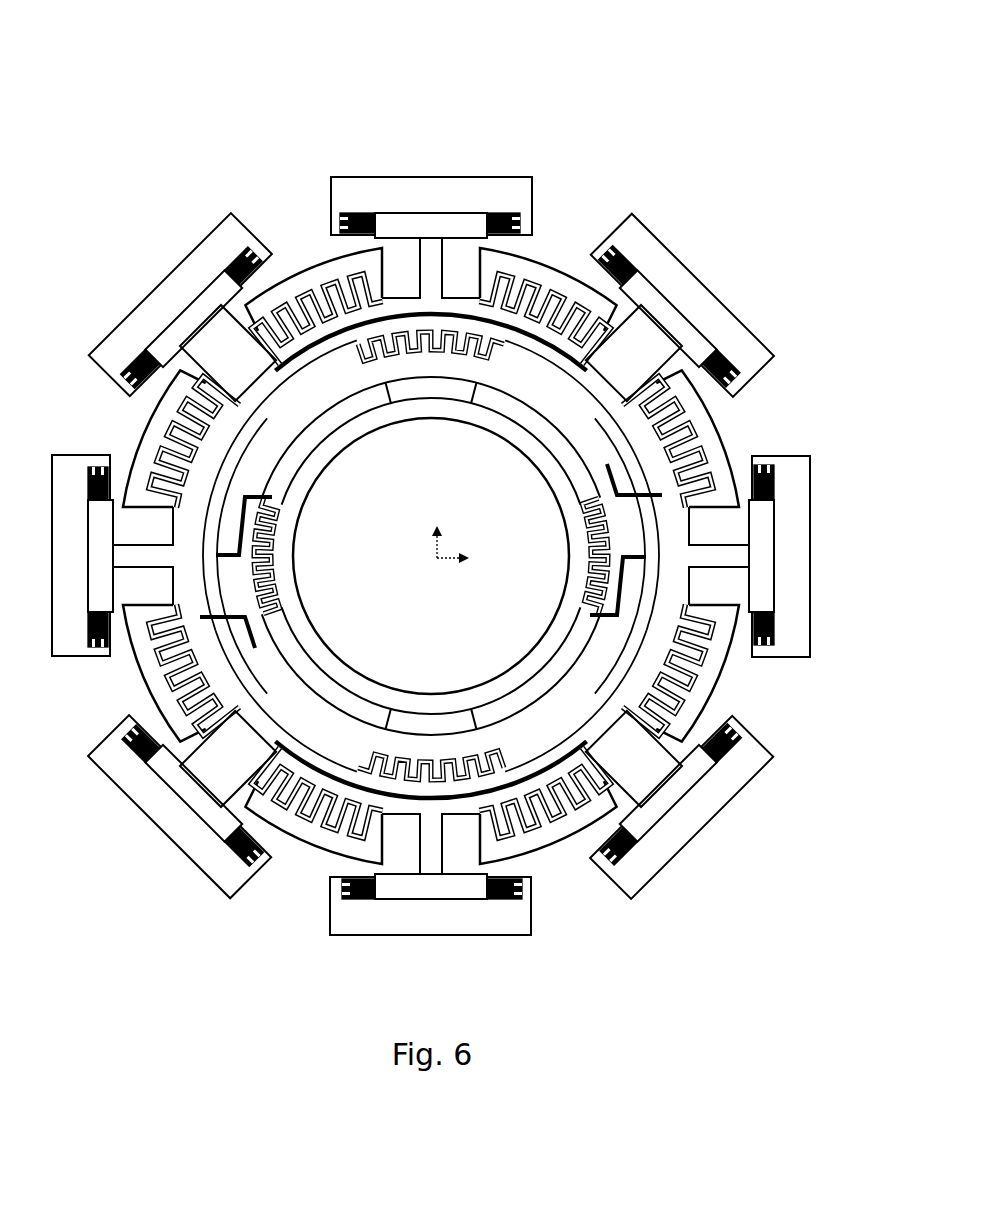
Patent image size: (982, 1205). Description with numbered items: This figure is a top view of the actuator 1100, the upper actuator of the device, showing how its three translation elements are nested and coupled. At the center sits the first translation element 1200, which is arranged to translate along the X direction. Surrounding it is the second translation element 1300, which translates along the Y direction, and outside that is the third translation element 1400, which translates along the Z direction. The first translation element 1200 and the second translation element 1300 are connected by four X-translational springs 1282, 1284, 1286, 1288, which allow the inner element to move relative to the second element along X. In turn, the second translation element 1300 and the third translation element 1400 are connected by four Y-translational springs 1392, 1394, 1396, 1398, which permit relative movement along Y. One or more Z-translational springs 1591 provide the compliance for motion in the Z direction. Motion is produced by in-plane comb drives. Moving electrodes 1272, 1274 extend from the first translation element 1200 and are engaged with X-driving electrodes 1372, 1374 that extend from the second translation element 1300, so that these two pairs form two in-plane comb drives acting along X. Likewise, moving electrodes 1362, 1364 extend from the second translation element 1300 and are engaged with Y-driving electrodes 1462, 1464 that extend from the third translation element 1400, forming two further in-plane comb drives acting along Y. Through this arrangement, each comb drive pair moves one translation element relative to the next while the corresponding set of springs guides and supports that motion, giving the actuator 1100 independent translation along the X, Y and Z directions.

The actuator 1100 is at (86, 108).
The first translation element 1200 is at (553, 700).
The second translation element 1300 is at (556, 700).
The third translation element 1400 is at (652, 662).
The Z-translational spring 1591 is at (128, 362).
The moving electrode 1272 is at (585, 488).
The moving electrode 1274 is at (272, 627).
The X-translational spring 1282 is at (470, 401).
The X-translational spring 1284 is at (381, 403).
The X-translational spring 1286 is at (397, 712).
The X-translational spring 1288 is at (482, 709).
The moving electrode 1362 is at (470, 356).
The moving electrode 1364 is at (465, 745).
The X-driving electrode 1372 is at (612, 496).
The X-driving electrode 1374 is at (258, 600).
The Y-translational spring 1392 is at (642, 486).
The Y-translational spring 1394 is at (220, 486).
The Y-translational spring 1396 is at (222, 622).
The Y-translational spring 1398 is at (645, 622).
The Y-driving electrode 1462 is at (362, 344).
The Y-driving electrode 1464 is at (362, 755).